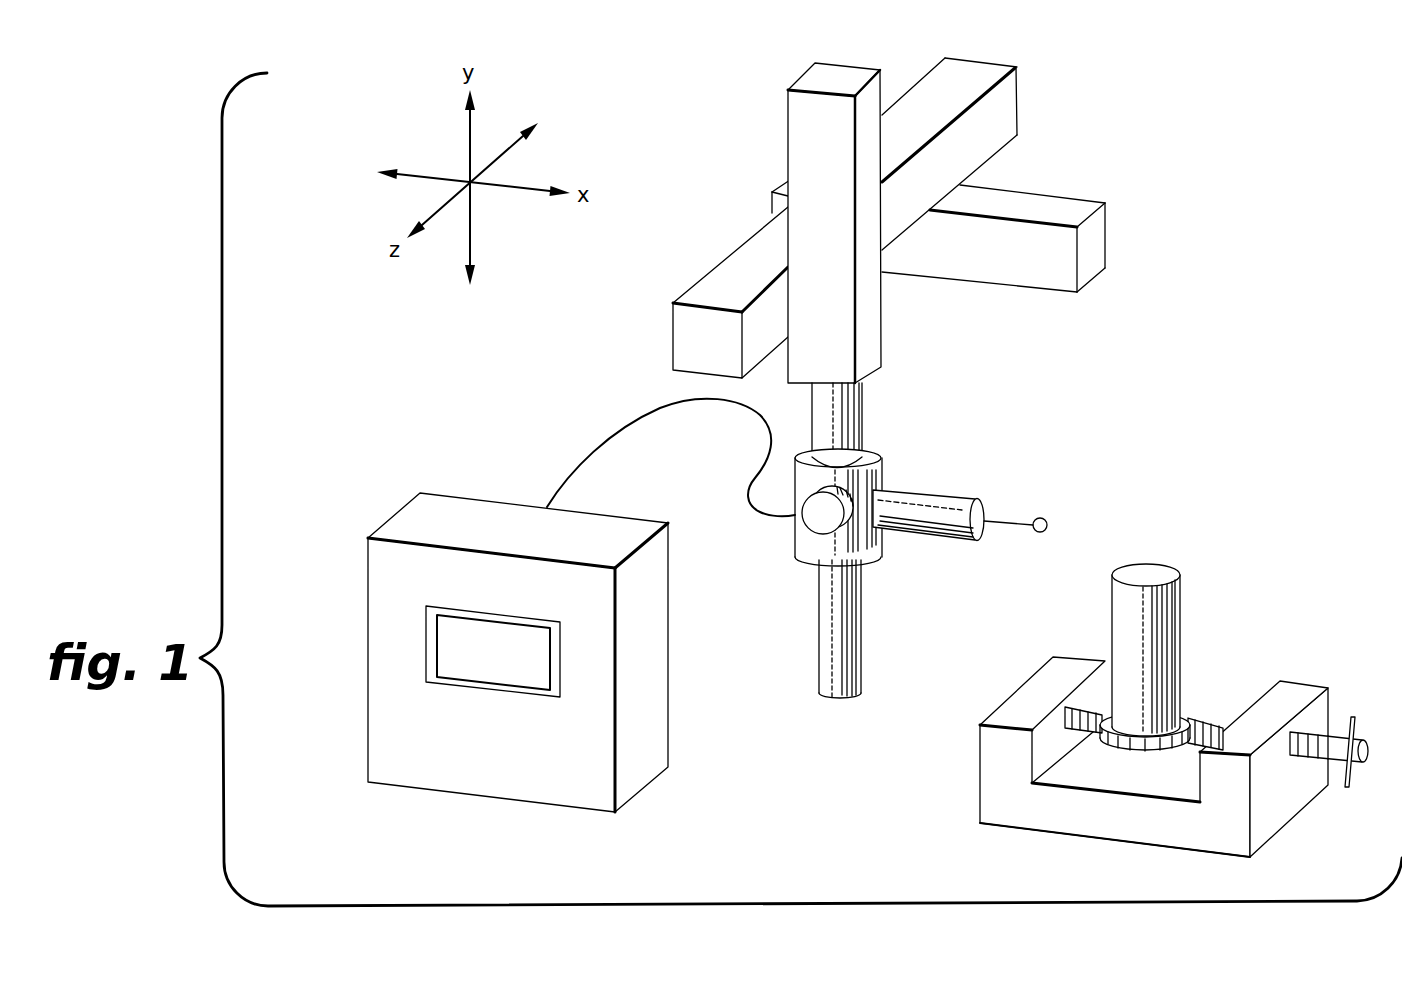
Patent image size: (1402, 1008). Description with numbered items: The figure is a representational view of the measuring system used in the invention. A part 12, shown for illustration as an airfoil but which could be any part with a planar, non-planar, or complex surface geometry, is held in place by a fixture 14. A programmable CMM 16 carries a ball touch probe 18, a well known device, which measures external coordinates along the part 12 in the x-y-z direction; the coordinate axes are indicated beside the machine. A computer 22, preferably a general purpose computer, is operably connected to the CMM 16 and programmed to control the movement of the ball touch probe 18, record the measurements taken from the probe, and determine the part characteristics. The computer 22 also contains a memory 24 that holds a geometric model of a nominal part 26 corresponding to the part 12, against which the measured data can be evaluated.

The part 12 is at (1182, 620).
The fixture 14 is at (1303, 690).
The programmable CMM 16 is at (1107, 125).
The ball touch probe 18 is at (1018, 490).
The computer 22 is at (458, 610).
The memory 24 is at (430, 684).
The geometric model of a nominal part 26 is at (450, 635).